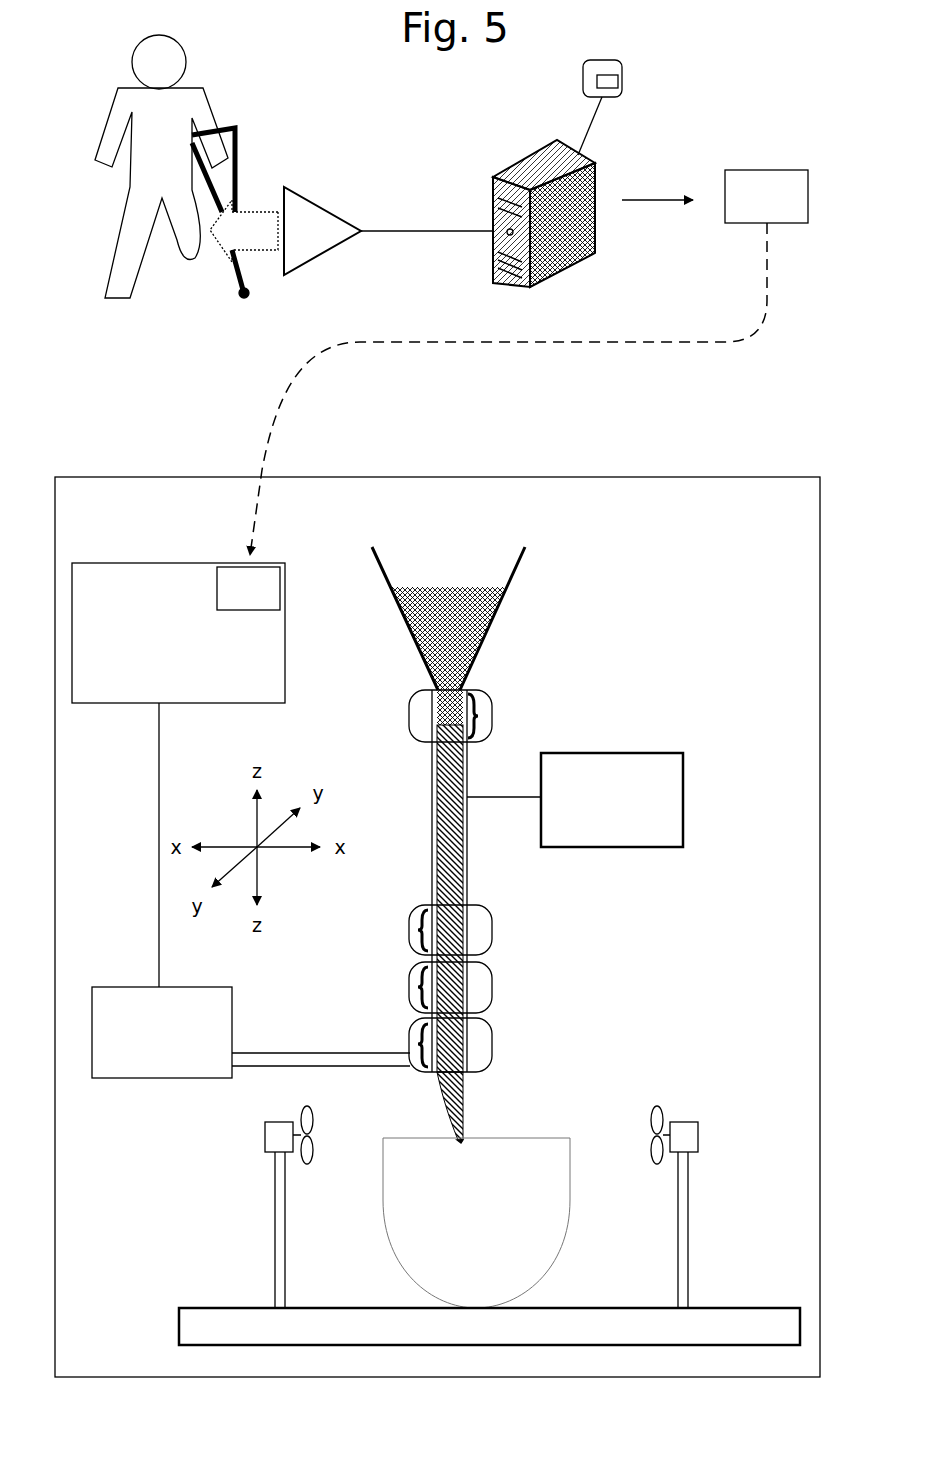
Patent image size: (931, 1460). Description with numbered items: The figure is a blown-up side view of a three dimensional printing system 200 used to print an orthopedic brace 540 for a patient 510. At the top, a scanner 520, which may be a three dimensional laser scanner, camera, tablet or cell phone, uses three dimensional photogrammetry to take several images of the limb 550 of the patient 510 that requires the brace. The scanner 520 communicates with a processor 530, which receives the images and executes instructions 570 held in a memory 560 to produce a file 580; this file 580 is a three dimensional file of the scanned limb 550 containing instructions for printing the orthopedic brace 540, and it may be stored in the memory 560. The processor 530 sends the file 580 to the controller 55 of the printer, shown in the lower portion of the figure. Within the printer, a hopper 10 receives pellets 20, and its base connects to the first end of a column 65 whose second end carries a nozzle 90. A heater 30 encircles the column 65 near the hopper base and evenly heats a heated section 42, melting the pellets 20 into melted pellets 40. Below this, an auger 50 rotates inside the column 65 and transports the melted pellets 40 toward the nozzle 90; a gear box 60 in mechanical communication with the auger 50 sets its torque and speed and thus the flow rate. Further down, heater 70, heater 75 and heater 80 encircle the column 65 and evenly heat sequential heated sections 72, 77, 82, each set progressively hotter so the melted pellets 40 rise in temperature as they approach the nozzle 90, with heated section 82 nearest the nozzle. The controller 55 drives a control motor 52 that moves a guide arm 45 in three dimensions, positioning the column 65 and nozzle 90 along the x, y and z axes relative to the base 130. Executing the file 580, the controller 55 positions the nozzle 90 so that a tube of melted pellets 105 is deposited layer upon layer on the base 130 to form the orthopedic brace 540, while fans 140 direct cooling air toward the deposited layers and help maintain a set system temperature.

The patient 510 is at (147, 98).
The limb 550 is at (183, 238).
The scanner 520 is at (303, 217).
The processor 530 is at (533, 170).
The memory 560 is at (583, 78).
The instructions 570 is at (608, 88).
The file 580 is at (512, 390).
The three dimensional printing system 200 is at (437, 927).
The controller 55 is at (178, 775).
The control motor 52 is at (162, 1032).
The guide arm 45 is at (275, 1058).
The hopper 10 is at (487, 637).
The pellets 20 is at (450, 590).
The heater 30 is at (492, 715).
The melted pellets 40 is at (447, 710).
The heated section 42 is at (478, 715).
The auger 50 is at (437, 752).
The column 65 is at (430, 773).
The gear box 60 is at (603, 835).
The heater 70 is at (492, 933).
The heated section 72 is at (420, 930).
The heater 75 is at (492, 990).
The heated section 77 is at (420, 990).
The heater 80 is at (492, 1050).
The heated section 82 is at (420, 1045).
The nozzle 90 is at (465, 1097).
The tube of melted pellets 105 is at (470, 1138).
The orthopedic brace 540 is at (553, 1215).
The base 130 is at (489, 1326).
The fans 140 is at (268, 1132).